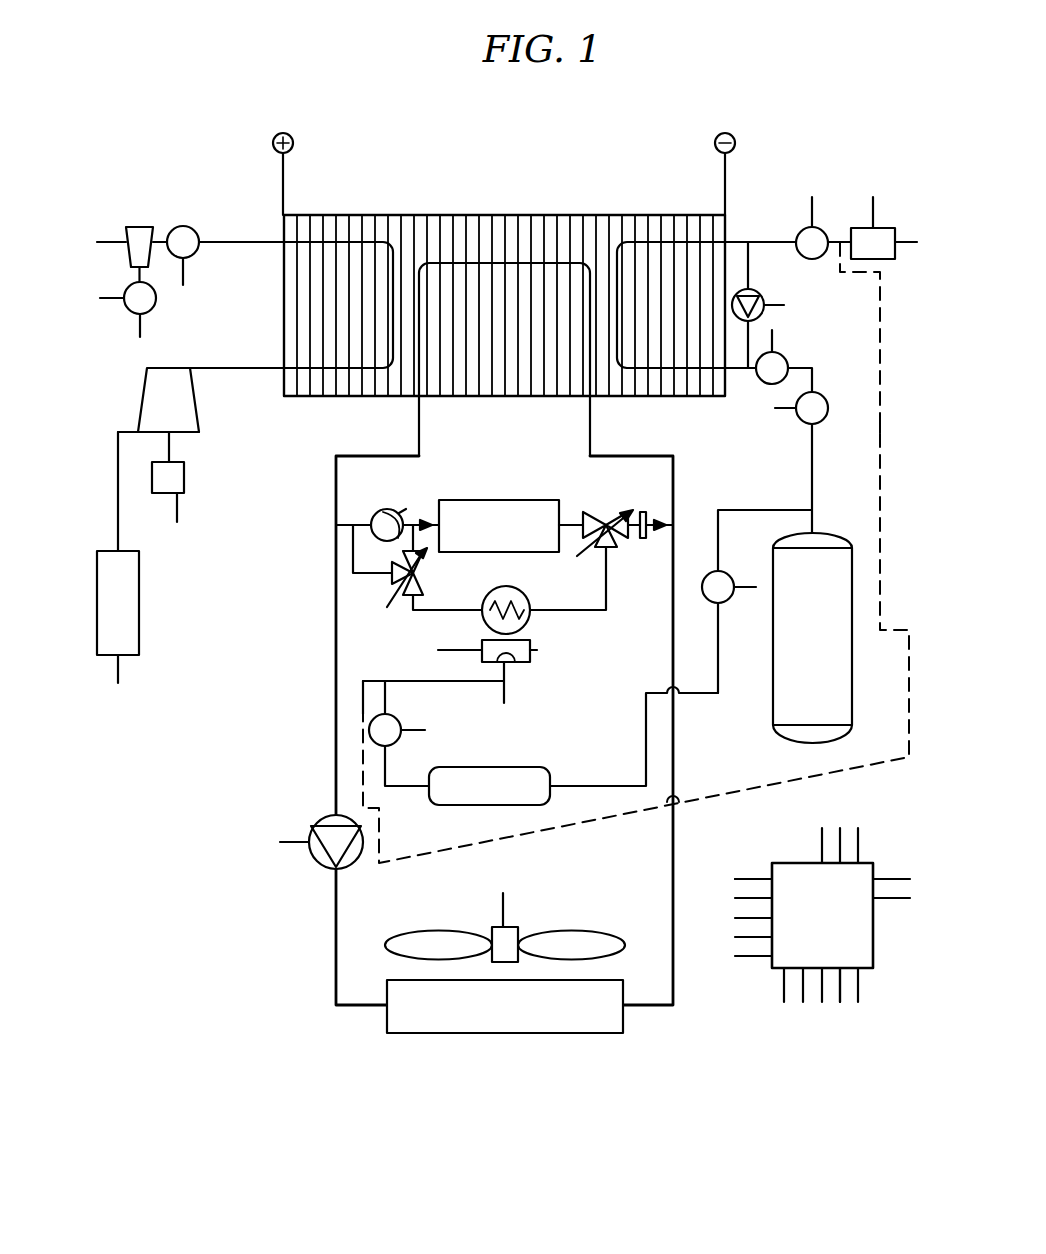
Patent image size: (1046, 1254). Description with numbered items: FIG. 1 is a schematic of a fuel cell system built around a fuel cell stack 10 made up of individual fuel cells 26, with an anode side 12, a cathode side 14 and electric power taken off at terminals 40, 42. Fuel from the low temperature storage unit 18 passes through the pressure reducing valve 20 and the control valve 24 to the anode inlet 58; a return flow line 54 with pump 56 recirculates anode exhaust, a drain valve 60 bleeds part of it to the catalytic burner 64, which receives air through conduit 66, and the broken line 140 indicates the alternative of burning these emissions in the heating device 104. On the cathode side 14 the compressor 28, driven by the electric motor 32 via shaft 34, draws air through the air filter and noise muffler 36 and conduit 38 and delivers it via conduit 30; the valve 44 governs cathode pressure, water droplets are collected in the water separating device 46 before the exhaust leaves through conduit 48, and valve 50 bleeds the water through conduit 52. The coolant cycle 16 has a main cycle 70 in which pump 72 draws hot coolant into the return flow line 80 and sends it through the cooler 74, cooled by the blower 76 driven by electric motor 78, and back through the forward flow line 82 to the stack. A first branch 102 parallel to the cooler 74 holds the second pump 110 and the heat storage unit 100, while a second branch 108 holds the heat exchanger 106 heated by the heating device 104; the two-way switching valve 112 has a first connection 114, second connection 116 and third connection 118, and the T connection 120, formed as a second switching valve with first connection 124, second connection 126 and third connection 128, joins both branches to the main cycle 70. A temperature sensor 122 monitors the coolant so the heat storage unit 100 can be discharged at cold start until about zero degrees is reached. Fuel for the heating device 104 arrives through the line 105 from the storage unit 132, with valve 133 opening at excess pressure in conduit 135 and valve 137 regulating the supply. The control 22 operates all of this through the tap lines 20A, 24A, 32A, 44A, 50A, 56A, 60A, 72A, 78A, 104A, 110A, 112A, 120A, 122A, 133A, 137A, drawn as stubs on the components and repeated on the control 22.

The fuel cell stack 10 is at (469, 212).
The anode side 12 is at (843, 300).
The cathode side 14 is at (284, 374).
The coolant cycle 16 is at (593, 437).
The low temperature storage unit 18 is at (840, 678).
The pressure reducing valve 20 is at (826, 403).
The control conduit 20A is at (752, 878).
The control 22 is at (840, 828).
The control valve 24 is at (770, 384).
The tap line 24A is at (775, 338).
The fuel cells 26 is at (292, 228).
The air compressor 28 is at (152, 390).
The conduit 30 is at (260, 367).
The electric motor 32 is at (183, 479).
The control line 32A is at (179, 518).
The shaft 34 is at (171, 448).
The air filter and noise muffler 36 is at (133, 593).
The conduit 38 is at (121, 516).
The terminal 40 is at (292, 148).
The terminal 42 is at (716, 137).
The valve 44 is at (196, 230).
The control line 44A is at (186, 276).
The water separating device 46 is at (141, 228).
The conduit 48 is at (112, 241).
The valve 50 is at (150, 306).
The tap line 50A is at (110, 297).
The conduit 52 is at (139, 336).
The return flow line 54 is at (750, 262).
The pump 56 is at (759, 294).
The conduit 56A is at (780, 306).
The anode inlet 58 is at (733, 371).
The drain valve 60 is at (805, 229).
The tap line 60A is at (810, 197).
The burner 64 is at (885, 232).
The conduit 66 is at (872, 197).
The main cycle 70 is at (335, 722).
The pump 72 is at (320, 852).
The control line 72A is at (300, 840).
The cooler 74 is at (527, 1022).
The cooling blower 76 is at (577, 938).
The electric motor 78 is at (510, 935).
The control line 78A is at (502, 908).
The return flow line 80 is at (418, 430).
The forward flow line 82 is at (588, 430).
The heat storage unit 100 is at (492, 503).
The first branch 102 is at (333, 520).
The heating device 104 is at (537, 650).
The tap line 104A is at (505, 700).
The sensor line 105 is at (438, 650).
The heat exchanger 106 is at (527, 622).
The second branch 108 is at (448, 611).
The second pump 110 is at (381, 509).
The control line 110A is at (400, 511).
The two-way switching valve 112 is at (391, 579).
The control line 112A is at (397, 597).
The first connection 114 is at (351, 550).
The second connection 116 is at (420, 540).
The third connection 118 is at (410, 600).
The T connection 120 is at (598, 512).
The control line 120A is at (590, 552).
The temperature sensor 122 is at (642, 512).
The sensor line 122A is at (840, 1002).
The first connection 124 is at (566, 530).
The second connection 126 is at (608, 580).
The third connection 128 is at (622, 539).
The storage unit 132 is at (512, 778).
The valve 133 is at (724, 575).
The tap line 133A is at (752, 590).
The conduit 135 is at (720, 525).
The valve 137 is at (398, 718).
The control line 137A is at (426, 732).
The broken line 140 is at (882, 432).